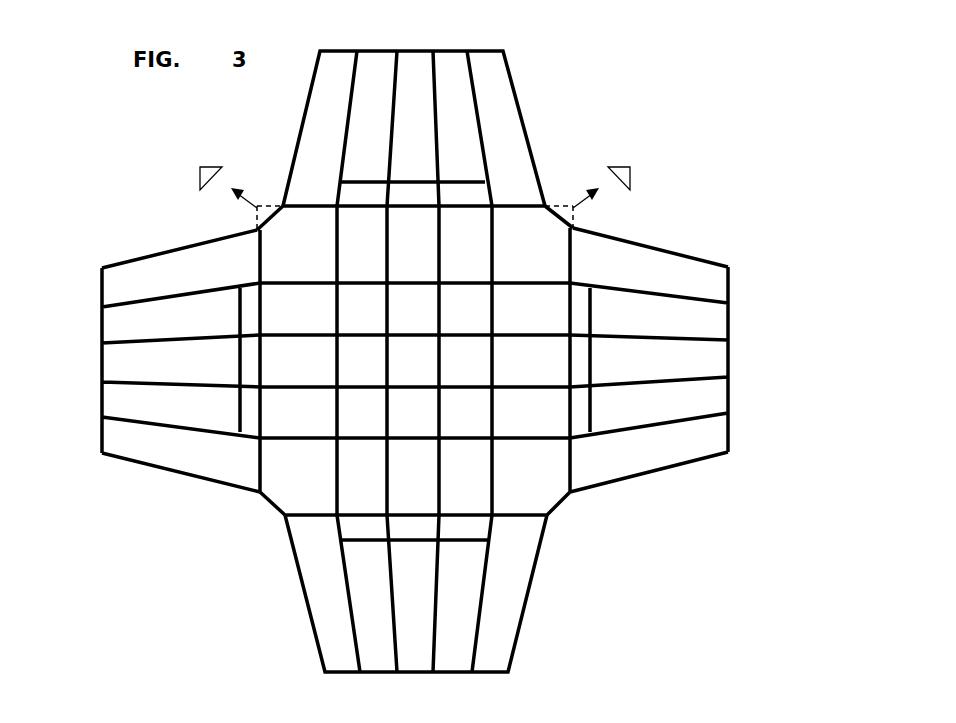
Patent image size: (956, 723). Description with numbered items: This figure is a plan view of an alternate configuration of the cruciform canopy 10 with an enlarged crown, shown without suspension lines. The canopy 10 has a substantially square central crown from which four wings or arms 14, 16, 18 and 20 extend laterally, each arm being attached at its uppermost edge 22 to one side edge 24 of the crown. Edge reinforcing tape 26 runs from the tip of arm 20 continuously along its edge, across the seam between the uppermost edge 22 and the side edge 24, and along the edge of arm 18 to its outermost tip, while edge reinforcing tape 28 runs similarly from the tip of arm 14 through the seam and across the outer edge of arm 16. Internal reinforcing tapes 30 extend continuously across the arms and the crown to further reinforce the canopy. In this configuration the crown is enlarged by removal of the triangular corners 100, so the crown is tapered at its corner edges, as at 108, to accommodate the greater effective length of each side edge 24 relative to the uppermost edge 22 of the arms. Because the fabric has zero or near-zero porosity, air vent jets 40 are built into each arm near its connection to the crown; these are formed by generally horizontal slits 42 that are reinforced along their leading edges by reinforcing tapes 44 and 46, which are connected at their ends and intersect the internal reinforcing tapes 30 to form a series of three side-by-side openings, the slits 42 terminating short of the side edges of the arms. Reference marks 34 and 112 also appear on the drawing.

The canopy 10 is at (560, 613).
The arm 14 is at (715, 395).
The arm 16 is at (113, 317).
The arm 18 is at (408, 62).
The arm 20 is at (283, 598).
The uppermost edge 22 is at (602, 478).
The side edge 24 is at (505, 512).
The edge reinforcing tape 26 is at (523, 118).
The edge reinforcing tape 28 is at (173, 473).
The internal reinforcing tape 30 is at (440, 352).
The outer edge 34 is at (100, 439).
The air venting jet 40 is at (230, 358).
The slit 42 is at (595, 373).
The reinforcing tape 44 is at (589, 303).
The reinforcing tape 46 is at (595, 318).
The triangular corner 100 is at (205, 166).
The tapered corner edge 108 is at (255, 230).
The fold line 112 is at (490, 413).